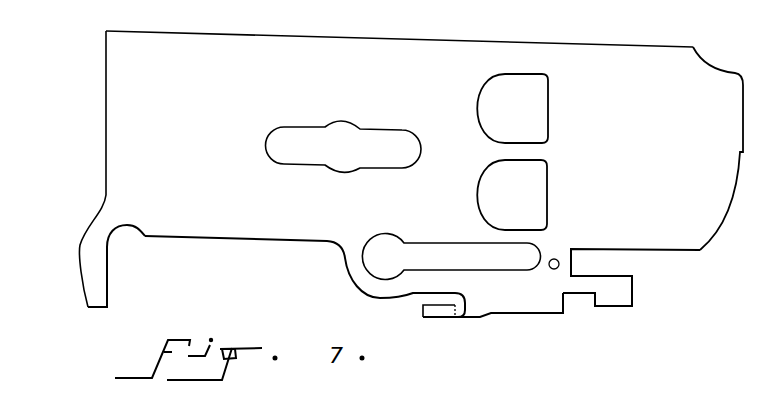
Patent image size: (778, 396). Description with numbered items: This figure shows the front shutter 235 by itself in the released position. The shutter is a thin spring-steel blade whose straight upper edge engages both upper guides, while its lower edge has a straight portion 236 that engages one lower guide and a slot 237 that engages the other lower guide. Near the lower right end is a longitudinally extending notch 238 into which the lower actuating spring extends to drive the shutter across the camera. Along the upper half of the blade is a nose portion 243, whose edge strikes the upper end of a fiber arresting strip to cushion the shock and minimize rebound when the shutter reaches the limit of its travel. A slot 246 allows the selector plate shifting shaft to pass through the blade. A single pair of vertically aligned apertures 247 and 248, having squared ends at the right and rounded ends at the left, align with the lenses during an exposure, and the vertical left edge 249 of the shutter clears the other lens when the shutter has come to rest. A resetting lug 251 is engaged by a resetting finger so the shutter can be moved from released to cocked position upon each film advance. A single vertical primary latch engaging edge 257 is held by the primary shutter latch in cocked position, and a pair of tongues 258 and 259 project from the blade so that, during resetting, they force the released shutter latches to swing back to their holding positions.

The front shutter 235 is at (184, 45).
The straight portion 236 is at (238, 240).
The slot 237 is at (453, 240).
The longitudinally extending notch 238 is at (607, 251).
The nose portion 243 is at (739, 123).
The slot 246 is at (306, 162).
The aperture 247 is at (545, 196).
The aperture 248 is at (546, 108).
The vertical left edge 249 is at (105, 158).
The resetting lug 251 is at (93, 287).
The primary latch engaging edge 257 is at (568, 304).
The tongue 258 is at (603, 299).
The tongue 259 is at (432, 310).